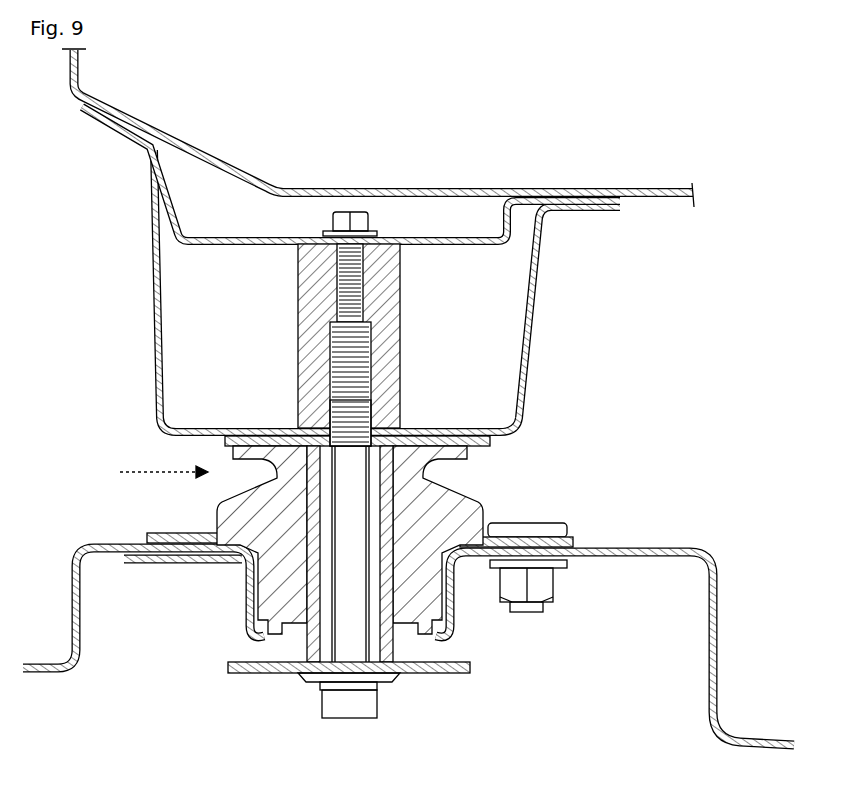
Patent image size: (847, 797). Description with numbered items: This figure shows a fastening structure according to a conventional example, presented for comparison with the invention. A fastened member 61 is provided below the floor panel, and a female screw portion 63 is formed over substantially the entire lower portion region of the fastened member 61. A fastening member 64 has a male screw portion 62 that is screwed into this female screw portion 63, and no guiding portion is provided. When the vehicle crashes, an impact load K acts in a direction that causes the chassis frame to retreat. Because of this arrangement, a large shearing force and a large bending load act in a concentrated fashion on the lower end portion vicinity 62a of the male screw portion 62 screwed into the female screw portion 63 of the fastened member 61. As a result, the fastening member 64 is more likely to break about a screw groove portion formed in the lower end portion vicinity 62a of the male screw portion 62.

The fastened member 61 is at (308, 330).
The male screw portion 62 is at (366, 344).
The lower end portion vicinity of the male screw portion 62a is at (372, 412).
The female screw portion 63 is at (340, 378).
The fastening member 64 is at (343, 660).
The impact load K is at (150, 472).